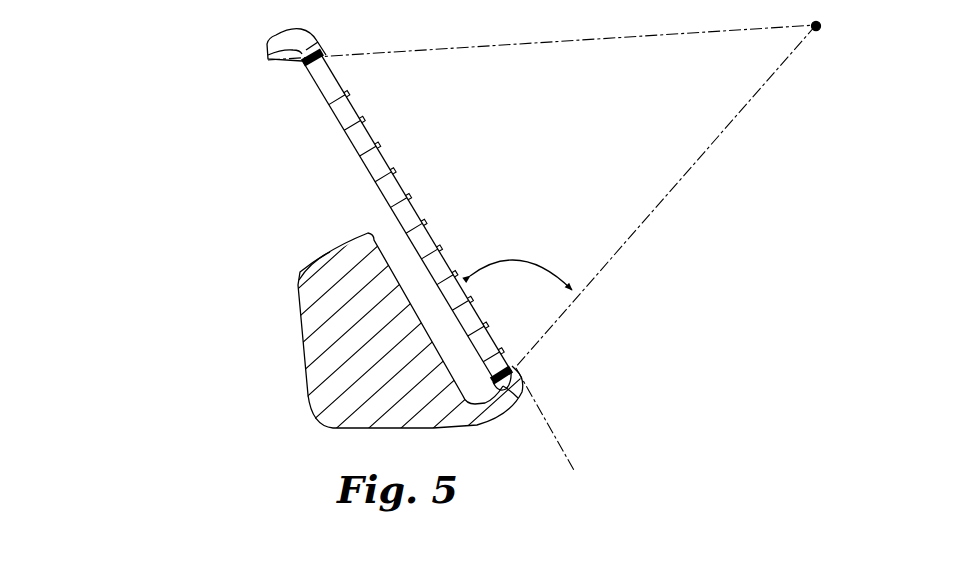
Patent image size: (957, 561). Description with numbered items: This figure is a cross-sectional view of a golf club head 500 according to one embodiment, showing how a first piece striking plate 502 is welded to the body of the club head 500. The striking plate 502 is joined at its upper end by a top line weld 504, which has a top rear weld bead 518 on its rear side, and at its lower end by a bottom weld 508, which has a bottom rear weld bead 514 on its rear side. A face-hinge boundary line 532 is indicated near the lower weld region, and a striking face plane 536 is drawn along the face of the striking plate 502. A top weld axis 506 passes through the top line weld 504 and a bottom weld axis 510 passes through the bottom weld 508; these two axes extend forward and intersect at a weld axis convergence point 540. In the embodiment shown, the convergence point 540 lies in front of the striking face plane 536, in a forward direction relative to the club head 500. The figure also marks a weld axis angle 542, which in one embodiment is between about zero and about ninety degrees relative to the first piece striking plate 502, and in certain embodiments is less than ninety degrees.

The club head 500 is at (128, 81).
The first piece striking plate 502 is at (384, 171).
The top line weld 504 is at (344, 61).
The top weld axis 506 is at (637, 36).
The bottom weld 508 is at (528, 364).
The bottom weld axis 510 is at (633, 230).
The bottom rear weld bead 514 is at (503, 380).
The top rear weld bead 518 is at (305, 68).
The face-hinge boundary line 532 is at (533, 365).
The striking face plane 536 is at (562, 453).
The weld axis convergence point 540 is at (816, 31).
The weld axis angle 542 is at (518, 265).